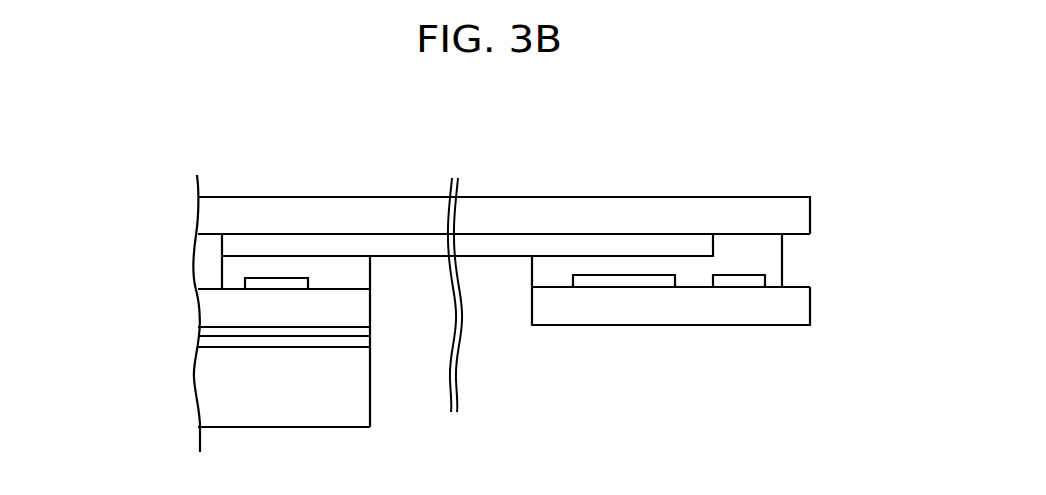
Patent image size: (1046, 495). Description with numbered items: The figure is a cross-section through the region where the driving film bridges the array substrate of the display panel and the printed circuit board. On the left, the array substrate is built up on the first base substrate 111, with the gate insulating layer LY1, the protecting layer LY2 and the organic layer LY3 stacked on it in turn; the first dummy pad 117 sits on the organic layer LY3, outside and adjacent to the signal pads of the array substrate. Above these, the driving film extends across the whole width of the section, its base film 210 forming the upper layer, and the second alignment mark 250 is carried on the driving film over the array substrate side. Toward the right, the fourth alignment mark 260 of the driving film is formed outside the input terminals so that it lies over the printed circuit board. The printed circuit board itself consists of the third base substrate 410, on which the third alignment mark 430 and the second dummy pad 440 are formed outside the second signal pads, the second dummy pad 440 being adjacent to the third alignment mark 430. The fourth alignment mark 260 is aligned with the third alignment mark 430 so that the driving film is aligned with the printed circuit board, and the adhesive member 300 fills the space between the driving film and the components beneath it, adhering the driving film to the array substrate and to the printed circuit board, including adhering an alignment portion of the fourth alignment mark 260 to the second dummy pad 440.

The base film 210 is at (205, 208).
The second alignment mark 250 is at (418, 243).
The fourth alignment mark 260 is at (589, 243).
The adhesive member 300 is at (228, 265).
The organic layer LY3 is at (203, 304).
The protecting layer LY2 is at (203, 331).
The gate insulating layer LY1 is at (201, 343).
The first base substrate 111 is at (203, 393).
The first dummy pad 117 is at (273, 287).
The third base substrate 410 is at (557, 315).
The second dummy pad 440 is at (630, 283).
The third alignment mark 430 is at (740, 283).